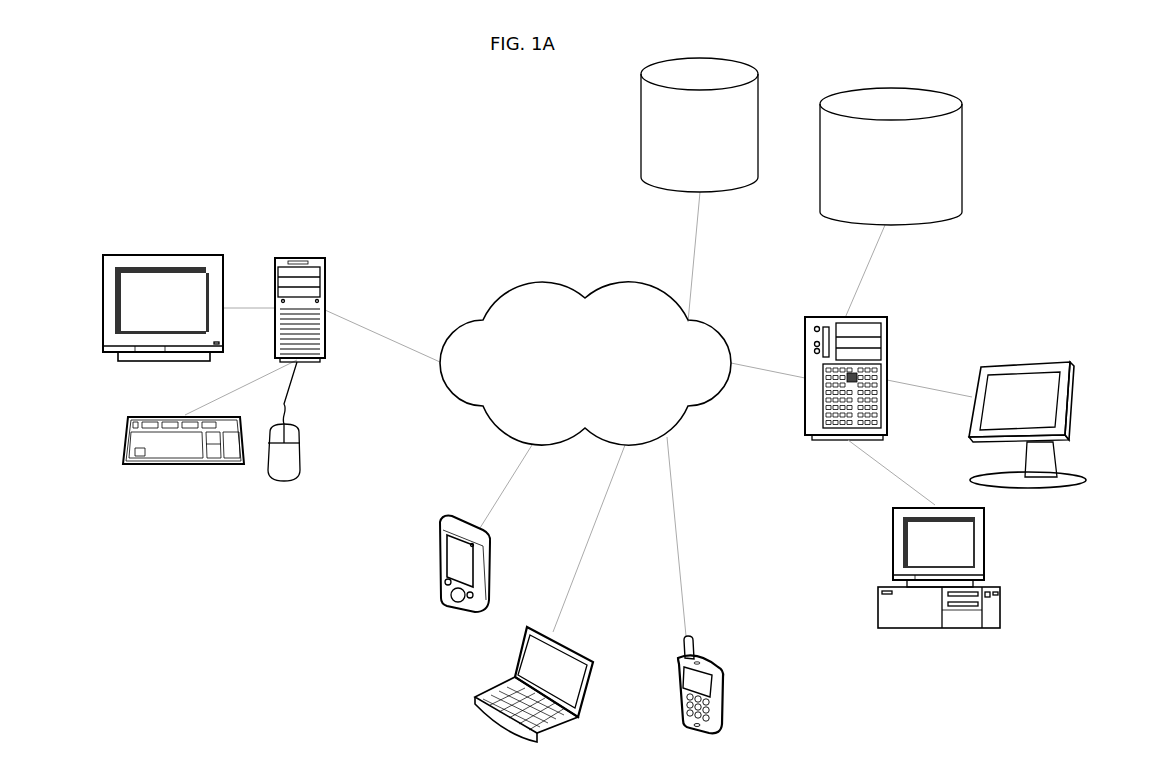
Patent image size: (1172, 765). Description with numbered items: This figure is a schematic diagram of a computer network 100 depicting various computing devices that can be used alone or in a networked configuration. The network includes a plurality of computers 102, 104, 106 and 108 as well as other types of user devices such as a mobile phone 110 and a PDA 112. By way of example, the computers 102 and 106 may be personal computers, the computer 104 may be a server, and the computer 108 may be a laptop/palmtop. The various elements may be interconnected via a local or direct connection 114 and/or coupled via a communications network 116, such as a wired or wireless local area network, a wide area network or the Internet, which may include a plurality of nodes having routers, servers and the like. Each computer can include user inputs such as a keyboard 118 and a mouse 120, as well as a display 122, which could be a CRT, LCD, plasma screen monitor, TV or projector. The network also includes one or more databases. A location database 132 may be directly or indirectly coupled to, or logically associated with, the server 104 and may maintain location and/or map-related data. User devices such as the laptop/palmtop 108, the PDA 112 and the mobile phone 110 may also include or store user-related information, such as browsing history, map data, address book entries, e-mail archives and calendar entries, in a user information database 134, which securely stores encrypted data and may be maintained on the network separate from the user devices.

The computer network 100 is at (515, 83).
The computer 102 is at (325, 265).
The computer 104 is at (805, 330).
The computer 106 is at (878, 592).
The computer 108 is at (475, 698).
The mobile phone 110 is at (730, 692).
The PDA 112 is at (440, 585).
The local or direct connection 114 is at (885, 472).
The communications network 116 is at (537, 283).
The keyboard 118 is at (180, 465).
The mouse 120 is at (302, 450).
The display 122 is at (157, 255).
The location database 132 is at (962, 120).
The database 134 is at (758, 130).